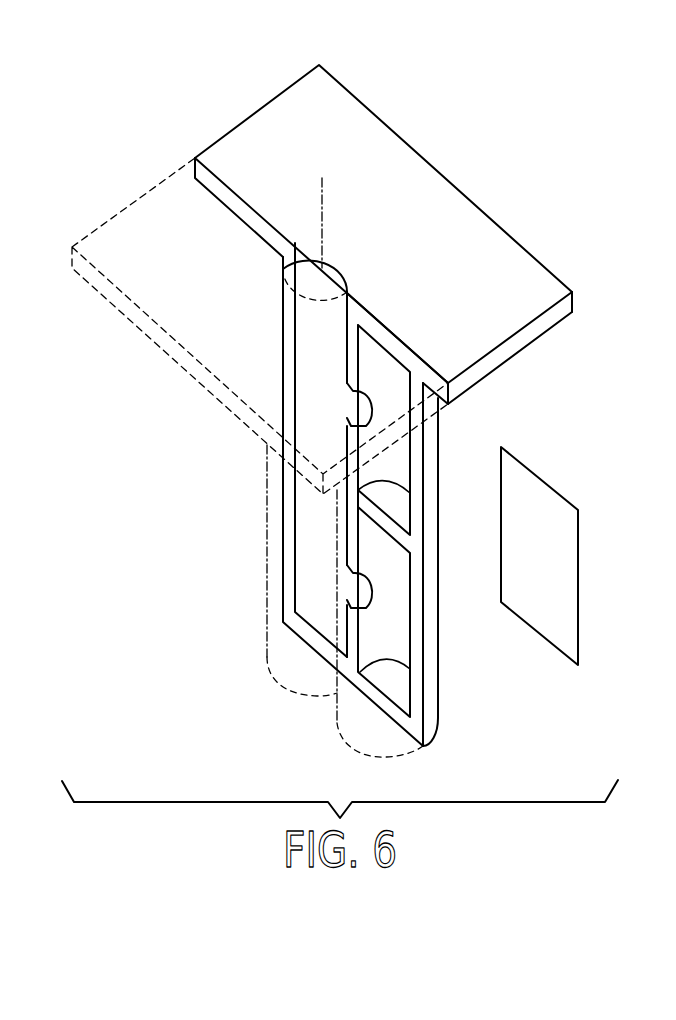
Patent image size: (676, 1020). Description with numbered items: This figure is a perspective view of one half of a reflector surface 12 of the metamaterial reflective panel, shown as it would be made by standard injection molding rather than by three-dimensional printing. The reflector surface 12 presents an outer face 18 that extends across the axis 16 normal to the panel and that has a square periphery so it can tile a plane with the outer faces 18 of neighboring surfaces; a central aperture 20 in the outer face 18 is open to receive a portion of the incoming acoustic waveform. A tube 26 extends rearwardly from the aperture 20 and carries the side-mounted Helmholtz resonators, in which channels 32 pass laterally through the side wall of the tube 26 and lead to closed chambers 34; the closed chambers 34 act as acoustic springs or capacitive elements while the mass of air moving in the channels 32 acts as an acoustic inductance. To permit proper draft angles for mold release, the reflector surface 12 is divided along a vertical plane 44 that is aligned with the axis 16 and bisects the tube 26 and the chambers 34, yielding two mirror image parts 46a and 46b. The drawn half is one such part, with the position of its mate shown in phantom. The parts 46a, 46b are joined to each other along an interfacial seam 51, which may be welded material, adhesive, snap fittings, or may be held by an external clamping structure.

The reflector surface 12 is at (459, 131).
The axis 16 is at (322, 228).
The outer face 18 is at (520, 273).
The central aperture 20 is at (305, 249).
The tube 26 is at (292, 508).
The channels 32 is at (337, 577).
The closed chambers 34 is at (397, 637).
The vertical plane 44 is at (566, 568).
The mirror image part 46a is at (138, 216).
The mirror image part 46b is at (262, 122).
The interfacial seam 51 is at (282, 409).